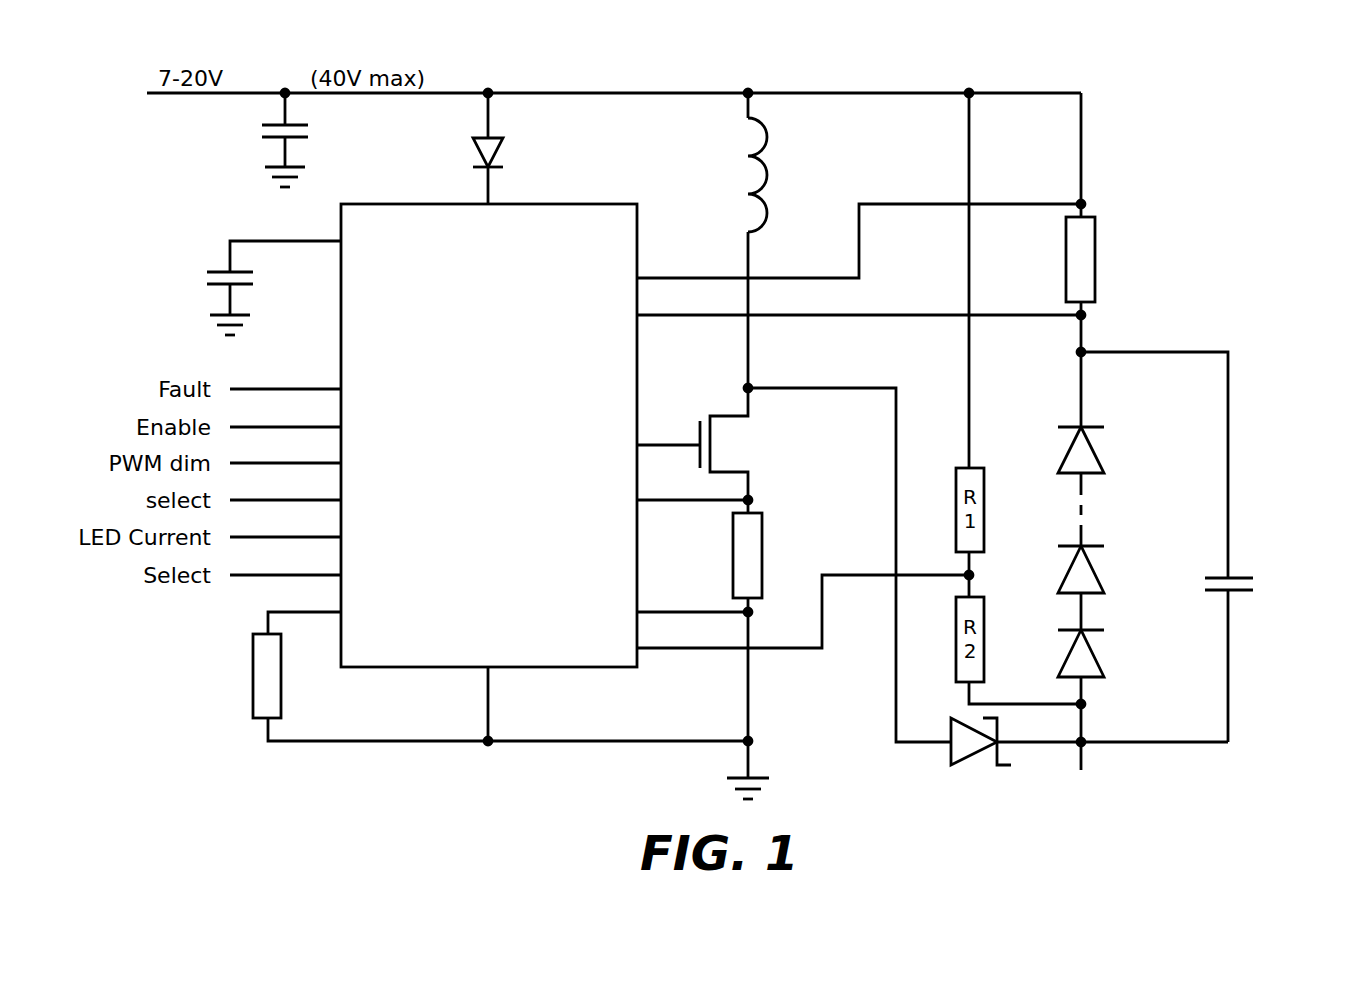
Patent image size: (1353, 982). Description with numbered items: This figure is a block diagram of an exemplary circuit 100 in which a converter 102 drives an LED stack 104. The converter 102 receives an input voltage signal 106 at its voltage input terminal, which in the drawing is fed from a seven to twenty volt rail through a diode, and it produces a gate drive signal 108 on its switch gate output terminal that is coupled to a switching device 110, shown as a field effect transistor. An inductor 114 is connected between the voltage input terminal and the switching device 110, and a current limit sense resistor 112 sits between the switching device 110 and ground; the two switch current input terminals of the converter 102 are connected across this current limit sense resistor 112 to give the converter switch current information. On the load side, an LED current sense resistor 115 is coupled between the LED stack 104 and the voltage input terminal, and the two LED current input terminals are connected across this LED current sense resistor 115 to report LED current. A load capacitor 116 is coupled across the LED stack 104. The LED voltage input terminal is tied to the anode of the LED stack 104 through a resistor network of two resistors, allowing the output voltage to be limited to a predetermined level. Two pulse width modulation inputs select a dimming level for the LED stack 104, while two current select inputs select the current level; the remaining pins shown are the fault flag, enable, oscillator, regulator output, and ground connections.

The circuit 100 is at (1143, 108).
The converter 102 is at (565, 204).
The LED stack 104 is at (1108, 408).
The input voltage signal 106 is at (462, 93).
The gate drive signal 108 is at (655, 447).
The switching device 110 is at (770, 460).
The current limit sense resistor 112 is at (762, 557).
The inductor 114 is at (767, 178).
The LED current sense resistor 115 is at (1095, 260).
The load capacitor 116 is at (1257, 583).